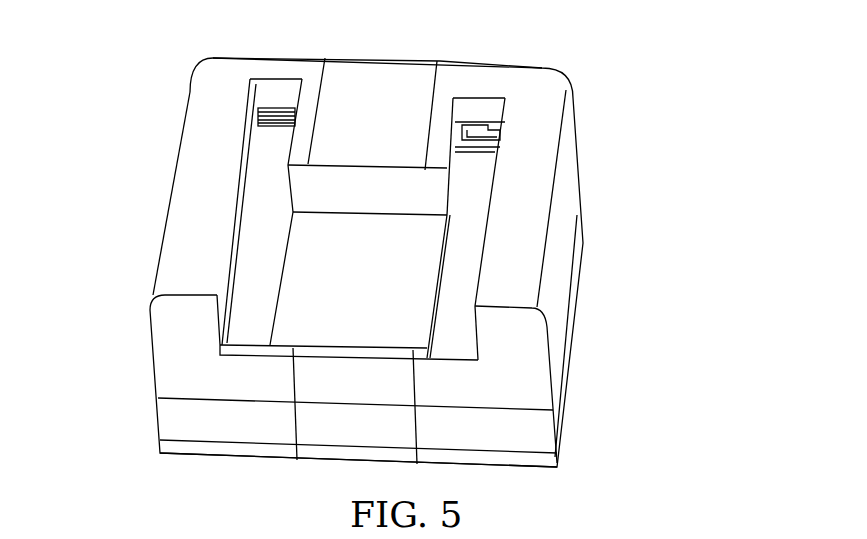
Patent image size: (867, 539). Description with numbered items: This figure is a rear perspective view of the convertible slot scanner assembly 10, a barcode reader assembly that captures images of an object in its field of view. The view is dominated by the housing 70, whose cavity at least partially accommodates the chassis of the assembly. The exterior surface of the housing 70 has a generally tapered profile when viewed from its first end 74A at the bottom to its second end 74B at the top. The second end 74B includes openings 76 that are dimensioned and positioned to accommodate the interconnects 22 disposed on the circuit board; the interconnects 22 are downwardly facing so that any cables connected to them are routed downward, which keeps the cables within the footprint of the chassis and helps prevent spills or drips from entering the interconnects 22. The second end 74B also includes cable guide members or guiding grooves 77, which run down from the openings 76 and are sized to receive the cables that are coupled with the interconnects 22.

The convertible slot scanner assembly 10 is at (639, 222).
The interconnect 22 is at (262, 122).
The housing 70 is at (558, 287).
The first end 74A is at (571, 457).
The second end 74B is at (595, 119).
The openings 76 is at (272, 100).
The guiding grooves 77 is at (247, 271).